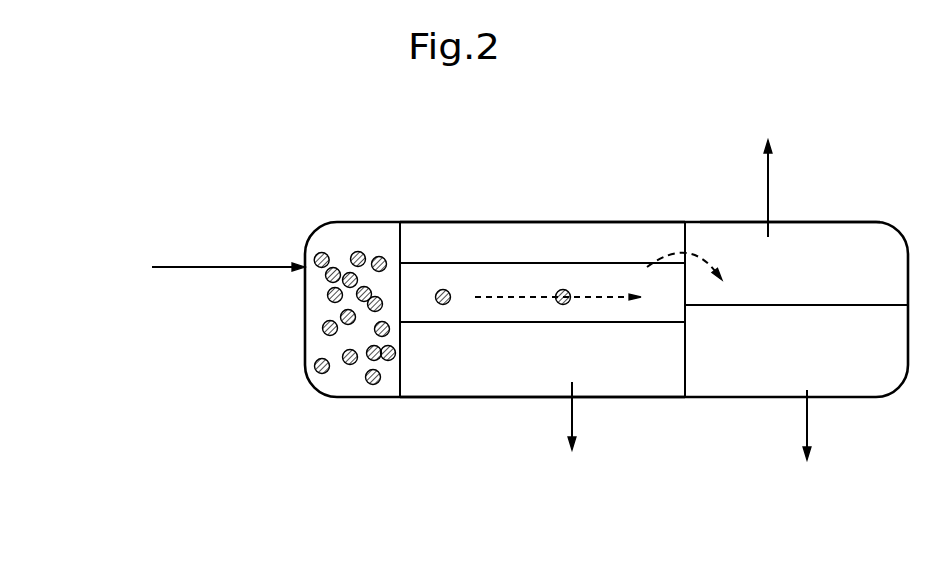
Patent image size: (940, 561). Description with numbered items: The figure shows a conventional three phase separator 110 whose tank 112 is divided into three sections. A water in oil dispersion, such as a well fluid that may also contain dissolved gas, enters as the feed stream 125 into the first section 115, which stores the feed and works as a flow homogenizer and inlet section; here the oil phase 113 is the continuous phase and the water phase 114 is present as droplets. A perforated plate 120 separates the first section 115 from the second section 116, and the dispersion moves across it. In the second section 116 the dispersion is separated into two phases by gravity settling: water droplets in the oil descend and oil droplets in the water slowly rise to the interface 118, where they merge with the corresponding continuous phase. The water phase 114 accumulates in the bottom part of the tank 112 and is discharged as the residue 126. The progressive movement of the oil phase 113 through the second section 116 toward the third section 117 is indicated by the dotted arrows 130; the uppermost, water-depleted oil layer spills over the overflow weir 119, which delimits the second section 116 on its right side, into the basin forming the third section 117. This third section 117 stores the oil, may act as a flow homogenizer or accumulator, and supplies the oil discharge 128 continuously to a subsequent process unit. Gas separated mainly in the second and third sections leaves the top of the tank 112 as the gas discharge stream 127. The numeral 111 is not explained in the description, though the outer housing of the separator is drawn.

The three phase separator 110 is at (337, 233).
The housing 111 is at (830, 235).
The tank 112 is at (560, 222).
The oil phase 113 is at (593, 275).
The water phase 114 is at (330, 293).
The first section 115 is at (390, 383).
The second section 116 is at (527, 373).
The third section 117 is at (732, 385).
The interface 118 is at (490, 320).
The overflow weir 119 is at (680, 263).
The perforated plate 120 is at (402, 355).
The feed stream 125 is at (198, 267).
The residue 126 is at (573, 418).
The gas discharge stream 127 is at (768, 193).
The oil discharge 128 is at (808, 428).
The arrows 130 is at (707, 257).